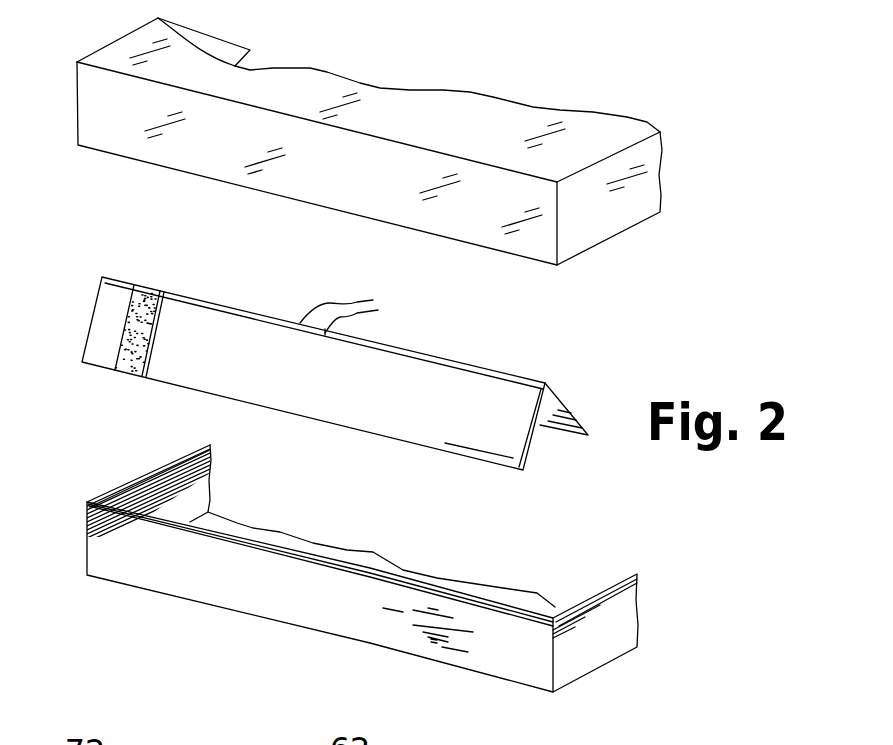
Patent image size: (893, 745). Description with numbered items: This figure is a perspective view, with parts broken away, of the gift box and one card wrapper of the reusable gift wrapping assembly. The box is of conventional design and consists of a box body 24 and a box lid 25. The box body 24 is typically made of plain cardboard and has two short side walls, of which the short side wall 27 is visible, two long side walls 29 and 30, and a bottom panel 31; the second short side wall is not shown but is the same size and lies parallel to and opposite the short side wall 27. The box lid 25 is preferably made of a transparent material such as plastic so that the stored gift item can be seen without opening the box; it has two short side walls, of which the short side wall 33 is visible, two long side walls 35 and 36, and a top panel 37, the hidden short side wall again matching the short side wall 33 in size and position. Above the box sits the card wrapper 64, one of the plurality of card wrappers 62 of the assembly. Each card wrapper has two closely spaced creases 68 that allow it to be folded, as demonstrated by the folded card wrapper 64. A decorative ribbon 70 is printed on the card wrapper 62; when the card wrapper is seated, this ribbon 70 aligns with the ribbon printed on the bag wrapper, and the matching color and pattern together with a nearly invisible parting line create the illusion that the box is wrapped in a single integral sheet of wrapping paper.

The box body 24 is at (410, 579).
The box lid 25 is at (372, 163).
The short side wall 27 is at (207, 590).
The long side wall 29 is at (579, 653).
The long side wall 30 is at (145, 493).
The bottom panel 31 is at (380, 562).
The short side wall 33 is at (178, 152).
The long side wall 35 is at (612, 218).
The long side wall 36 is at (215, 43).
The top panel 37 is at (450, 107).
The card wrapper 62 is at (364, 382).
The card wrapper 64 is at (288, 403).
The creases 68 is at (366, 304).
The decorative ribbon 70 is at (148, 300).